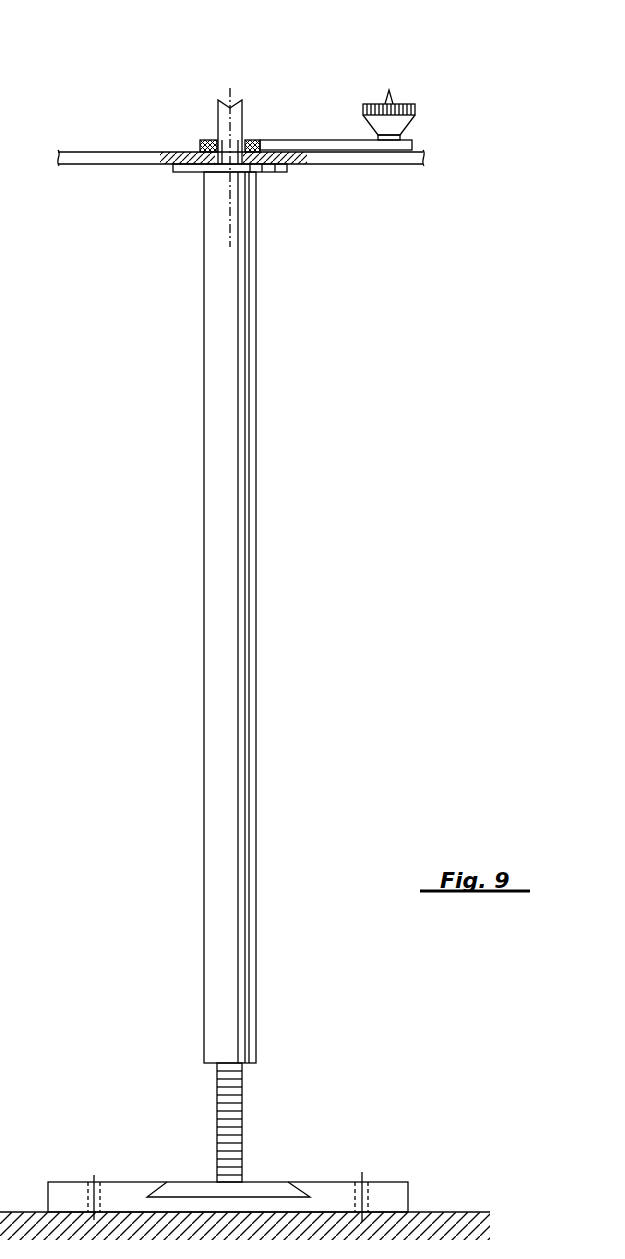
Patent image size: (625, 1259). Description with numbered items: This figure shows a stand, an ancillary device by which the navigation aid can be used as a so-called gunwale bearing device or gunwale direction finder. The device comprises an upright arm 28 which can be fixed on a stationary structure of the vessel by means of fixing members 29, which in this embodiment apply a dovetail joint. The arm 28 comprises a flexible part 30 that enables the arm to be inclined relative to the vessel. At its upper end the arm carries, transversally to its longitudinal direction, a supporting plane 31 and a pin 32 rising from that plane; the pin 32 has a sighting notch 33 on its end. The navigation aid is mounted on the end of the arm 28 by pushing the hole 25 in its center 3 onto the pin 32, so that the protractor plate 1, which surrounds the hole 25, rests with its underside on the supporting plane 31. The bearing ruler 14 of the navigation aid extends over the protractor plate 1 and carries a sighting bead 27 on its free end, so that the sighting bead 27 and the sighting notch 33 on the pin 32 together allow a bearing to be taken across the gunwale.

The protractor plate 1 is at (124, 158).
The center 3 is at (230, 212).
The bearing ruler 14 is at (413, 146).
The hole 25 is at (212, 139).
The sighting bead 27 is at (389, 92).
The arm 28 is at (272, 598).
The fixing members 29 is at (366, 1176).
The flexible part 30 is at (247, 1133).
The supporting plane 31 is at (263, 173).
The pin 32 is at (250, 139).
The sighting notch 33 is at (229, 99).